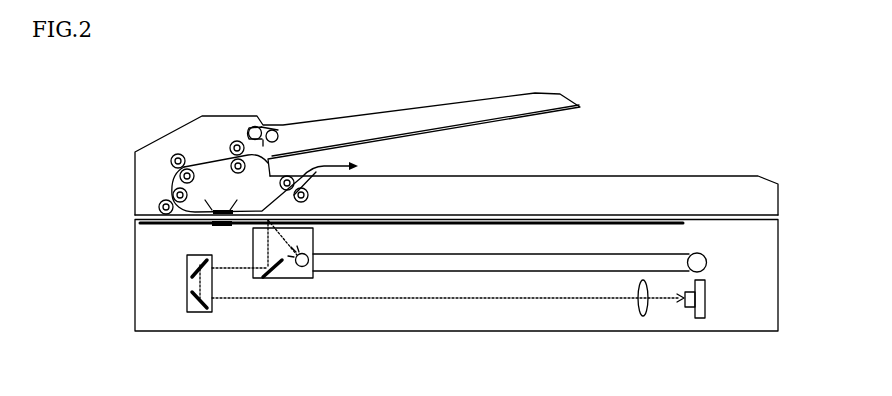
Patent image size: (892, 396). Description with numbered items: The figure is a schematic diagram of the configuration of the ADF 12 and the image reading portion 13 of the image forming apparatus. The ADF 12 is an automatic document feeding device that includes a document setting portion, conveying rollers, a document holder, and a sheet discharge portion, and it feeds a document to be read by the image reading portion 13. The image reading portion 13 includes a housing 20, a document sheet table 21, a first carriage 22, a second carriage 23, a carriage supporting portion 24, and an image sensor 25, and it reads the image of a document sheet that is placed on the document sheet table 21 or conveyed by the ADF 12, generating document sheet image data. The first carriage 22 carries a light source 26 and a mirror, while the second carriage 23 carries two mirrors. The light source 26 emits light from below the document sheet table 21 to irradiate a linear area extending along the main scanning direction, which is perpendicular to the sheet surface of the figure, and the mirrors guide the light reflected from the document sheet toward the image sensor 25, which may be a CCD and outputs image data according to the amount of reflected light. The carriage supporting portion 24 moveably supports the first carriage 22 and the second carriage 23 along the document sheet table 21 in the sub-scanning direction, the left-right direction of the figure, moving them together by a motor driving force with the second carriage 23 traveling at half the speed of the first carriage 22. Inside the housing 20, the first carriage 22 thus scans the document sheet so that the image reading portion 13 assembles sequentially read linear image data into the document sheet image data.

The ADF 12 is at (167, 135).
The image reading portion 13 is at (412, 280).
The housing 20 is at (133, 302).
The document sheet table 21 is at (458, 215).
The first carriage 22 is at (318, 297).
The second carriage 23 is at (181, 309).
The carriage supporting portion 24 is at (708, 258).
The image sensor 25 is at (706, 295).
The light source 26 is at (306, 266).